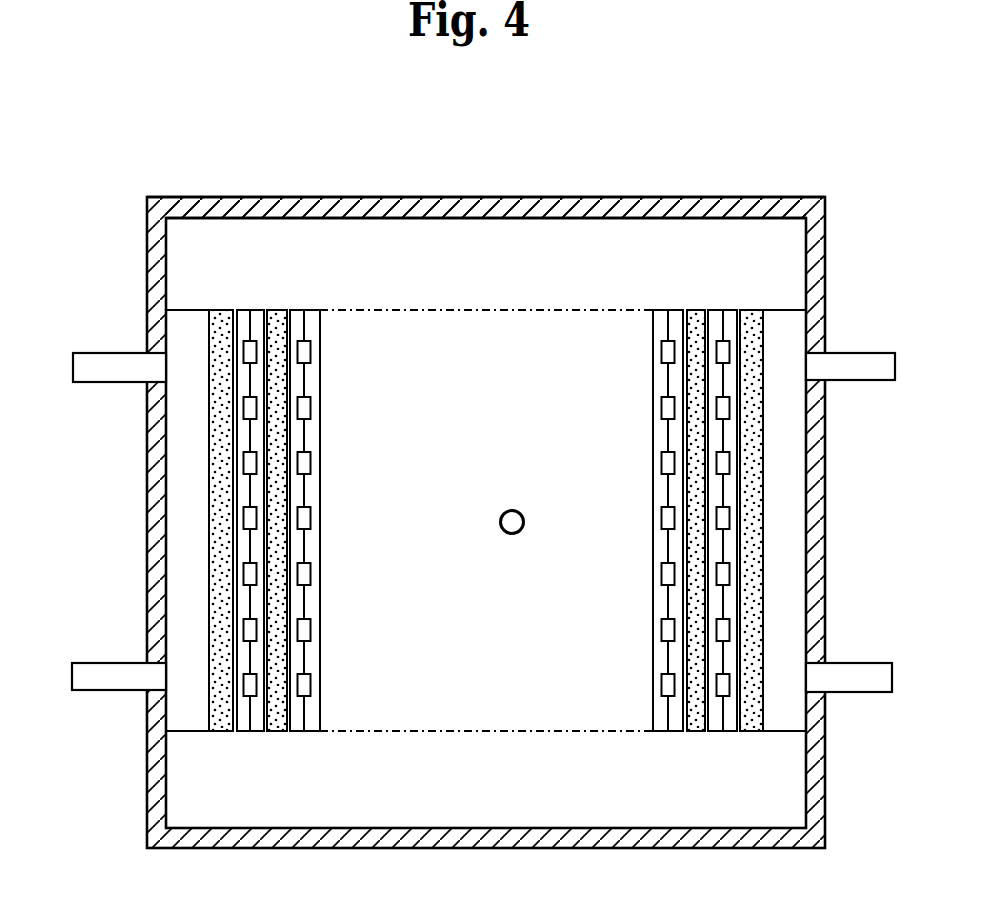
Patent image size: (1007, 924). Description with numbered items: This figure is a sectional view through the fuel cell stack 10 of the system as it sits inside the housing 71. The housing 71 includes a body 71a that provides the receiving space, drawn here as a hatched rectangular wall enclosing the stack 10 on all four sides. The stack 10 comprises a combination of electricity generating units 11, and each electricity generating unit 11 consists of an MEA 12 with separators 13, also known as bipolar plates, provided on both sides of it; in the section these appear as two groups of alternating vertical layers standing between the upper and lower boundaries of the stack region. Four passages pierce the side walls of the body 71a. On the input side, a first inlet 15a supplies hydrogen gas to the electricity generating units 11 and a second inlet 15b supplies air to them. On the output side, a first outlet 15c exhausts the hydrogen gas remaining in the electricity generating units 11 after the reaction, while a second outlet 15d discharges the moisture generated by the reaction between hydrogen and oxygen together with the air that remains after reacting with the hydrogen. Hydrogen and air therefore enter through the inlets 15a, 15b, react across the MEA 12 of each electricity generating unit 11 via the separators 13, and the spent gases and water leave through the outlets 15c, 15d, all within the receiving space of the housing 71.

The stack 10 is at (252, 791).
The electricity generating unit 11 is at (486, 414).
The MEA 12 is at (278, 310).
The separator 13 is at (365, 155).
The first inlet 15a is at (92, 690).
The second inlet 15b is at (100, 353).
The first outlet 15c is at (866, 353).
The second outlet 15d is at (862, 692).
The housing 71 is at (515, 491).
The body 71a is at (775, 185).